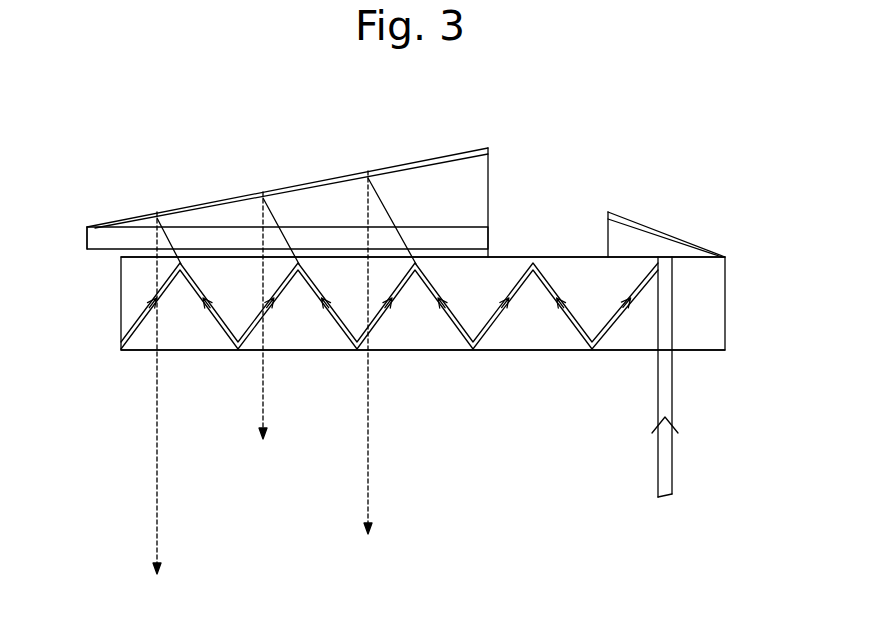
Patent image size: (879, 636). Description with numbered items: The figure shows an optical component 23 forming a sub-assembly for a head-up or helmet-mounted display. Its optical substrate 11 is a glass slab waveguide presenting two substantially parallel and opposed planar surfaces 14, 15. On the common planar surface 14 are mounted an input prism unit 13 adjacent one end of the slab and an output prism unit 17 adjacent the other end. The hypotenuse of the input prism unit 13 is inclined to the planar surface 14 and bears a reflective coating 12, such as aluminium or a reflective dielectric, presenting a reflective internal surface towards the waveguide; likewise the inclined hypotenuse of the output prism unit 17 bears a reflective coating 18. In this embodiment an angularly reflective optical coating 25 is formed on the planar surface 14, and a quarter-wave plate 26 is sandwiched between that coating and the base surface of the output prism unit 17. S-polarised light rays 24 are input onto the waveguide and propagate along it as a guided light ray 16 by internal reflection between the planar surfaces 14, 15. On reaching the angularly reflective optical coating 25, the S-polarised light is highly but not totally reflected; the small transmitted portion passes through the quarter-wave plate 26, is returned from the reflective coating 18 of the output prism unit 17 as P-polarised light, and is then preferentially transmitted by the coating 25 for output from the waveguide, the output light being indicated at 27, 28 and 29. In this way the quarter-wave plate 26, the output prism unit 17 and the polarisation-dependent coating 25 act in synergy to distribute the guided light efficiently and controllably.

The optical substrate 11 is at (710, 300).
The reflective coating 12 is at (706, 246).
The input prism unit 13 is at (632, 240).
The planar surface 14 is at (573, 257).
The planar surface 15 is at (565, 350).
The guided light ray 16 is at (497, 322).
The output prism unit 17 is at (450, 188).
The reflective coating 18 is at (308, 182).
The optical component 23 is at (252, 100).
The S-polarised light rays 24 is at (665, 462).
The angularly reflective optical coating 25 is at (211, 252).
The quarter-wave plate 26 is at (88, 237).
The light beam 27 is at (368, 492).
The light beam 28 is at (264, 410).
The light beam 29 is at (158, 525).